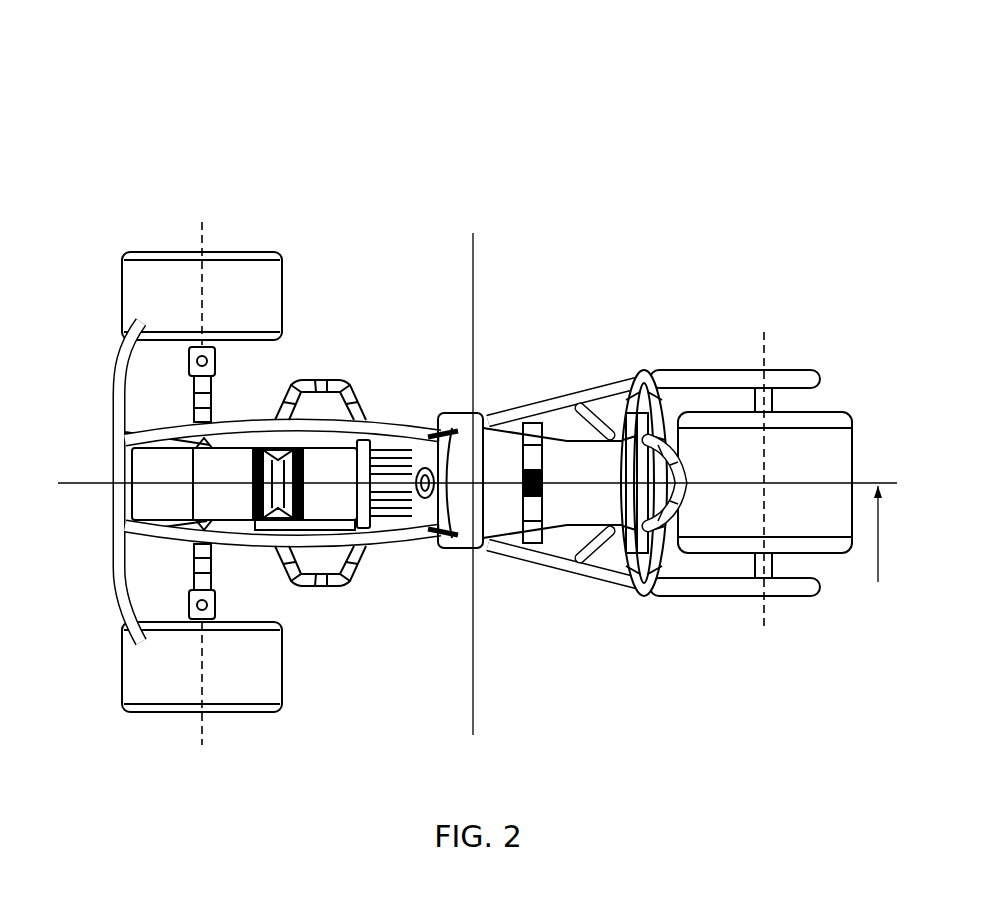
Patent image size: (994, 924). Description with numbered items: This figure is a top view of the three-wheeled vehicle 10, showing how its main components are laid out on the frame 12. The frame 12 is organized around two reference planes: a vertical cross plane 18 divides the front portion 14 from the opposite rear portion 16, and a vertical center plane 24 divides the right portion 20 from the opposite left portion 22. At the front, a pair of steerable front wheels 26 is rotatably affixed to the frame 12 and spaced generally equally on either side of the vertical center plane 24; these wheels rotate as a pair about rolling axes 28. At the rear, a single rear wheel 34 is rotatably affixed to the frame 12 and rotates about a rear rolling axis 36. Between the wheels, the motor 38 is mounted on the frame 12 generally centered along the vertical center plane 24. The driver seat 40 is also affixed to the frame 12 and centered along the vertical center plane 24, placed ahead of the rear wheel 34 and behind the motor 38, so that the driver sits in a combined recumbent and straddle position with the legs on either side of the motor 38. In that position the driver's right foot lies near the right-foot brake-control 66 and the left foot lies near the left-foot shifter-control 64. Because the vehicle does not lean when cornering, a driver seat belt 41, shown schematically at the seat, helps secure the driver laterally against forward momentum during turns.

The three-wheeled vehicle 10 is at (467, 77).
The frame 12 is at (668, 362).
The front portion 14 is at (246, 483).
The rear portion 16 is at (707, 482).
The vertical cross plane 18 is at (520, 487).
The right portion 20 is at (471, 337).
The left portion 22 is at (472, 632).
The vertical center plane 24 is at (878, 554).
The pair of steerable front wheels 26 is at (122, 246).
The rolling axes 28 is at (203, 220).
The rear wheel 34 is at (844, 412).
The rear rolling axis 36 is at (766, 331).
The motor 38 is at (203, 502).
The driver seat 40 is at (490, 418).
The driver seat belt 41 is at (533, 518).
The left-foot shifter-control 64 is at (302, 566).
The right-foot brake-control 66 is at (303, 400).